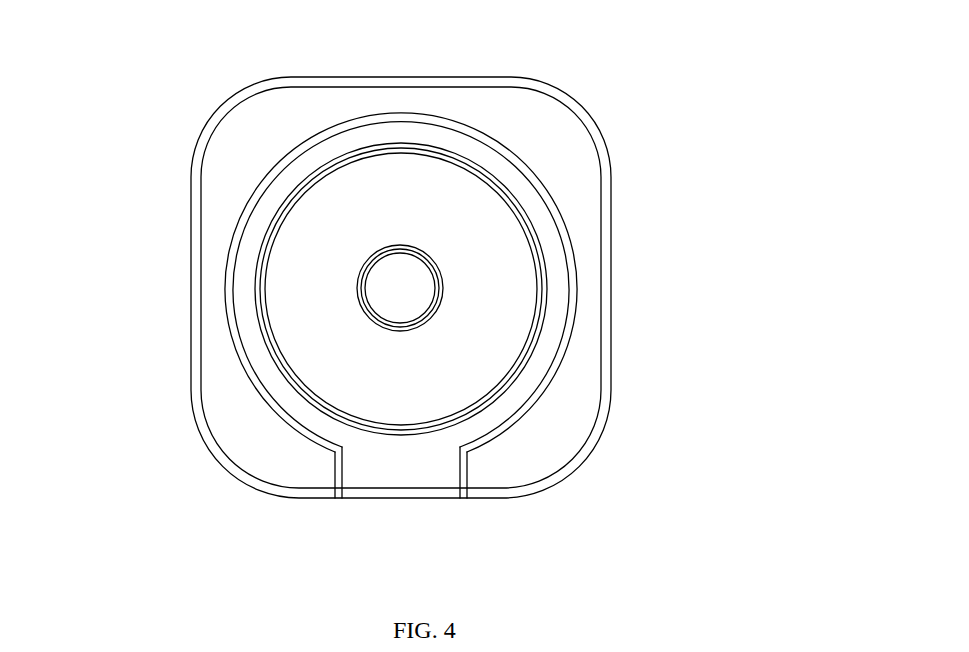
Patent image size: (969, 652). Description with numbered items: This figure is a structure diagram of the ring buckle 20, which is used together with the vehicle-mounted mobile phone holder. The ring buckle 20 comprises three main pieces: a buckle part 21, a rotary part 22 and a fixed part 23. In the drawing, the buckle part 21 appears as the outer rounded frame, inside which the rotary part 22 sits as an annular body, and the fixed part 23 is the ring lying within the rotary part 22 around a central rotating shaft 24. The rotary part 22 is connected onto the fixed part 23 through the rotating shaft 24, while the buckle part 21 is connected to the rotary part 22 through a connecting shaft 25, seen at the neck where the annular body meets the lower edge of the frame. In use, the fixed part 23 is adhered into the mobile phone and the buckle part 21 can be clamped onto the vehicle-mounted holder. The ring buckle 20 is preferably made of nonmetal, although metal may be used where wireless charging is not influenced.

The ring buckle 20 is at (612, 287).
The buckle part 21 is at (223, 178).
The rotary part 22 is at (377, 132).
The fixed part 23 is at (433, 218).
The rotating shaft 24 is at (400, 288).
The connecting shaft 25 is at (340, 500).